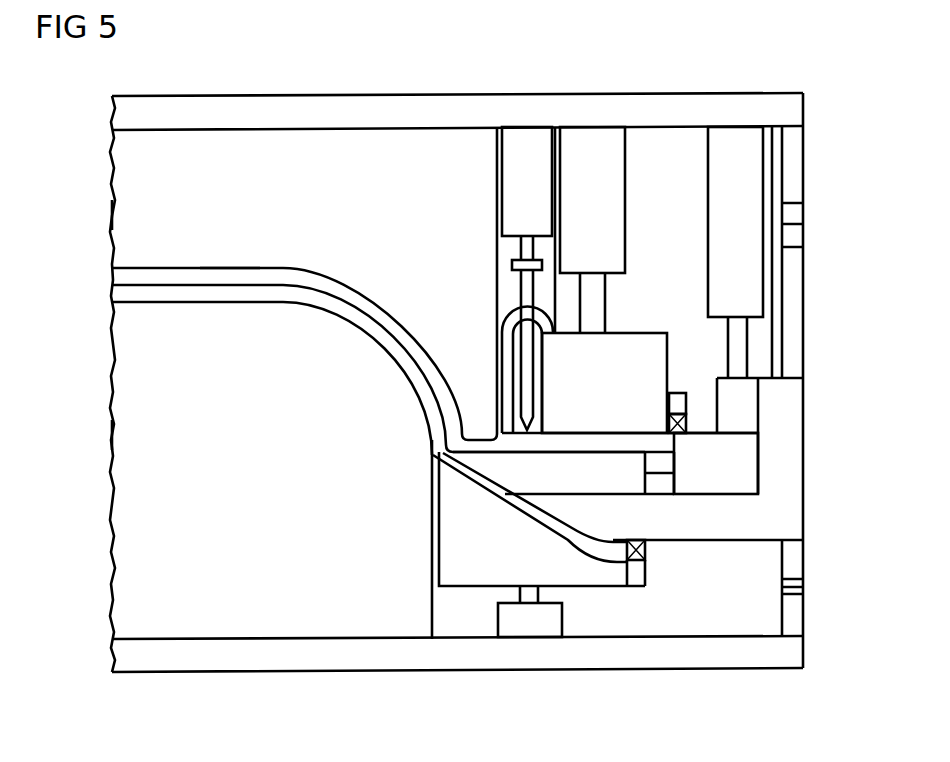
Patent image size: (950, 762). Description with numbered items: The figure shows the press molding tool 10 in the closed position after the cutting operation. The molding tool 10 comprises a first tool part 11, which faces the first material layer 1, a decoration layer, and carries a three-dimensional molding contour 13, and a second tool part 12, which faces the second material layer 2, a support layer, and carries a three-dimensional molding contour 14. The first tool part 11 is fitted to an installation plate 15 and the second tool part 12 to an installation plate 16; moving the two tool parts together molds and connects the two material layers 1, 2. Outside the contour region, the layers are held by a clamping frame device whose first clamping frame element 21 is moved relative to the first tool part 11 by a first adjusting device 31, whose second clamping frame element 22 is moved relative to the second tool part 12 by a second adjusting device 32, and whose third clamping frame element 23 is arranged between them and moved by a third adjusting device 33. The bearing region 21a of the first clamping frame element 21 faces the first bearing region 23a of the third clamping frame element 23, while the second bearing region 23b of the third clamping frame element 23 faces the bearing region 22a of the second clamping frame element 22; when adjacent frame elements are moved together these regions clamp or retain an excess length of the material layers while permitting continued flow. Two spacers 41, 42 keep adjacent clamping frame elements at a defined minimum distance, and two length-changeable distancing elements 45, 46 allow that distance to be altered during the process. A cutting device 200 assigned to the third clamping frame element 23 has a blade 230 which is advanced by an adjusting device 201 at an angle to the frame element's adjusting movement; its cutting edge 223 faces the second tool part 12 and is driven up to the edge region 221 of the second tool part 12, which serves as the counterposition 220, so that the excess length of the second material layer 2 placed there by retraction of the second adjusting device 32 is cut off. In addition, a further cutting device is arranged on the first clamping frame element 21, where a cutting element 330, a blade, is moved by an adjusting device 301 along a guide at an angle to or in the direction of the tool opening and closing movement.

The molding tool 10 is at (86, 150).
The first tool part 11 is at (116, 219).
The second tool part 12 is at (118, 433).
The first material layer 1 is at (116, 277).
The second material layer 2 is at (116, 292).
The three-dimensional molding contour 13 is at (218, 268).
The three-dimensional molding contour 14 is at (218, 304).
The installation plate 15 is at (459, 103).
The installation plate 16 is at (497, 660).
The first clamping frame element 21 is at (626, 342).
The bearing region 21a is at (562, 432).
The second clamping frame element 22 is at (450, 566).
The bearing region 22a is at (464, 483).
The third clamping frame element 23 is at (793, 506).
The first bearing region 23a is at (612, 448).
The second bearing region 23b is at (554, 514).
The first adjusting device 31 is at (612, 181).
The second adjusting device 32 is at (552, 621).
The third adjusting device 33 is at (716, 195).
The spacer 41 is at (679, 397).
The spacer 42 is at (646, 550).
The length-changeable distancing element 45 is at (793, 170).
The length-changeable distancing element 46 is at (793, 615).
The cutting device 200 is at (708, 482).
The adjusting device 201 is at (754, 462).
The counterposition 220 is at (412, 432).
The edge region 221 is at (396, 355).
The cutting edge 223 is at (434, 458).
The blade 230 is at (604, 484).
The adjusting device 301 is at (510, 172).
The cutting element 330 is at (524, 295).